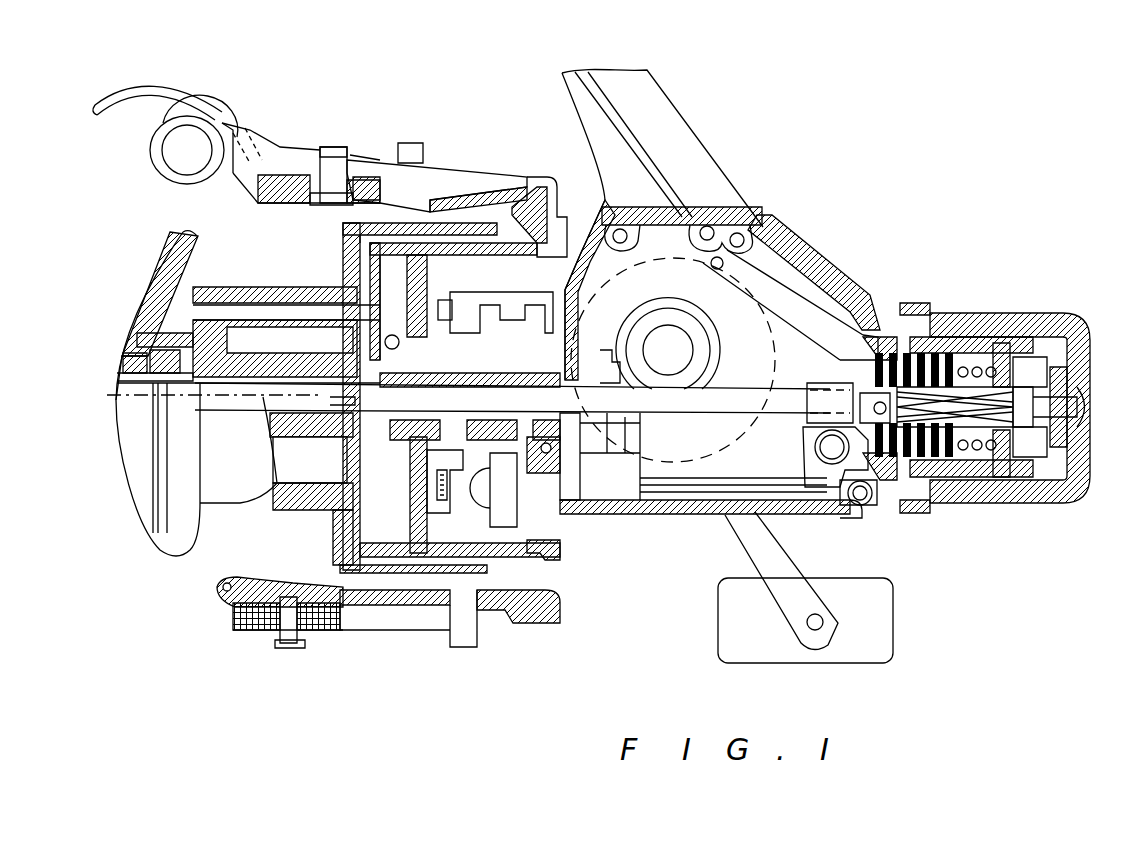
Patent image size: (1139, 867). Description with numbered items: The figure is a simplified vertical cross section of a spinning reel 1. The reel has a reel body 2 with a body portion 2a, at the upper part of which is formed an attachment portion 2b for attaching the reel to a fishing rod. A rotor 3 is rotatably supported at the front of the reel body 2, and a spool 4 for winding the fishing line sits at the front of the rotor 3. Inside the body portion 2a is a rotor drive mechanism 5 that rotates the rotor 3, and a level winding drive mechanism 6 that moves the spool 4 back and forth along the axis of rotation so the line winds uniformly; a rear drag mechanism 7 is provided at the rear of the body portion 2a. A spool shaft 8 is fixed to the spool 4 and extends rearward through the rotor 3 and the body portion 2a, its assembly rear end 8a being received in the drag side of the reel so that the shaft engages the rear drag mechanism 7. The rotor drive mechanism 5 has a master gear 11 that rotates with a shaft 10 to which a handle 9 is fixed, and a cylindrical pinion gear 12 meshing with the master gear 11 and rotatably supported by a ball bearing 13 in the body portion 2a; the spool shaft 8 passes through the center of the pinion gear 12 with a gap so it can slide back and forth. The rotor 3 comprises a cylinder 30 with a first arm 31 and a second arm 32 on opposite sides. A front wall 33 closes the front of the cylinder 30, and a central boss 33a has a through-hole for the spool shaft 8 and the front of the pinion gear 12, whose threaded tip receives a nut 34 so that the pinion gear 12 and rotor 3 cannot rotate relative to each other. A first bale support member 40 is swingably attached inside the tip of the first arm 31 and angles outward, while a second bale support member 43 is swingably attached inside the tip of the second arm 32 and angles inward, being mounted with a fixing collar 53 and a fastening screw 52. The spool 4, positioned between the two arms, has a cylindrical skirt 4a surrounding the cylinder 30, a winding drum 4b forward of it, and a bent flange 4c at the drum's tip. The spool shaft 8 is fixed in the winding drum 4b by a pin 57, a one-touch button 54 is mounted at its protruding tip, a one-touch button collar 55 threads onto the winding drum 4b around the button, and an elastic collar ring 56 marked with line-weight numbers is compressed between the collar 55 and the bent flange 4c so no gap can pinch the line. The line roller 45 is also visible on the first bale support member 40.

The spinning reel 1 is at (893, 212).
The reel body 2 is at (764, 361).
The body portion 2a is at (805, 287).
The attachment portion 2b is at (648, 104).
The rotor 3 is at (565, 568).
The spool 4 is at (275, 268).
The cylindrical skirt 4a is at (375, 575).
The winding drum 4b is at (244, 482).
The bent flange 4c is at (178, 235).
The rotor drive mechanism 5 is at (585, 368).
The level winding drive mechanism 6 is at (800, 435).
The rear drag mechanism 7 is at (1022, 302).
The spool shaft 8 is at (705, 440).
The assembly rear end 8a is at (670, 405).
The handle 9 is at (880, 634).
The shaft 10 is at (685, 351).
The master gear 11 is at (690, 212).
The pinion gear 12 is at (495, 298).
The ball bearing 13 is at (552, 452).
The cylinder 30 is at (480, 222).
The first arm 31 is at (450, 248).
The second arm 32 is at (412, 602).
The front wall 33 is at (368, 262).
The boss 33a is at (378, 497).
The nut 34 is at (392, 335).
The first bale support member 40 is at (236, 117).
The second bale support member 43 is at (229, 640).
The line roller 45 is at (117, 96).
The fastening screw 52 is at (283, 645).
The fixing collar 53 is at (265, 635).
The one-touch button 54 is at (122, 379).
The one-touch button collar 55 is at (135, 348).
The collar ring 56 is at (160, 262).
The pin 57 is at (355, 408).